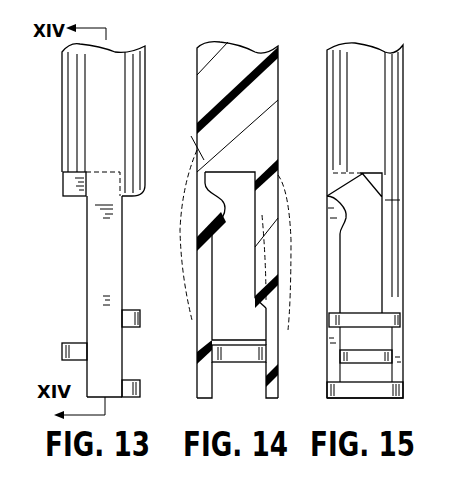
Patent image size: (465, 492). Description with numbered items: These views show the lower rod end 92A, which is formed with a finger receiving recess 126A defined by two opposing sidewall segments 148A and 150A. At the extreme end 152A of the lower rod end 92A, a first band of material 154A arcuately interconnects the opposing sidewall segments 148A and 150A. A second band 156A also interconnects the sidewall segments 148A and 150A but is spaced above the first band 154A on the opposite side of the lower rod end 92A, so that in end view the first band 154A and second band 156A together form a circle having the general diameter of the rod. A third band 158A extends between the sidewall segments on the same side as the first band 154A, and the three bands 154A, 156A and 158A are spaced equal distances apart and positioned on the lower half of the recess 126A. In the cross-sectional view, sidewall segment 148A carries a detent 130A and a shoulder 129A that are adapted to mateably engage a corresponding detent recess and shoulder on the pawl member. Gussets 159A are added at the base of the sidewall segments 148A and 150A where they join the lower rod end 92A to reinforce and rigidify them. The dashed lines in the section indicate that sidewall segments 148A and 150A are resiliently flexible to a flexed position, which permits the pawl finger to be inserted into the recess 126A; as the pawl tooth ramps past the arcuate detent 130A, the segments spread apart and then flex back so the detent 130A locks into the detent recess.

In FIG. 13, the lower rod end 92A is at (58, 163).
In FIG. 14, the lower rod end 92A is at (189, 58).
In FIG. 15, the lower rod end 92A is at (326, 52).
In FIG. 14, the finger receiving recess 126A is at (262, 336).
In FIG. 15, the finger receiving recess 126A is at (392, 312).
In FIG. 14, the shoulder 129A is at (257, 303).
In FIG. 14, the detent 130A is at (238, 248).
In FIG. 15, the detent 130A is at (346, 230).
In FIG. 14, the sidewall segment 148A is at (178, 262).
In FIG. 13, the sidewall segment 150A is at (100, 292).
In FIG. 14, the sidewall segment 150A is at (289, 205).
In FIG. 15, the sidewall segment 150A is at (405, 380).
In FIG. 13, the extreme end 152A is at (122, 398).
In FIG. 15, the extreme end 152A is at (334, 372).
In FIG. 13, the first band of material 154A is at (157, 367).
In FIG. 14, the first band of material 154A is at (239, 353).
In FIG. 15, the first band of material 154A is at (380, 398).
In FIG. 13, the second band 156A is at (80, 343).
In FIG. 14, the second band 156A is at (256, 383).
In FIG. 15, the second band 156A is at (340, 352).
In FIG. 13, the third band 158A is at (155, 300).
In FIG. 15, the third band 158A is at (330, 319).
In FIG. 13, the gussets 159A is at (78, 197).